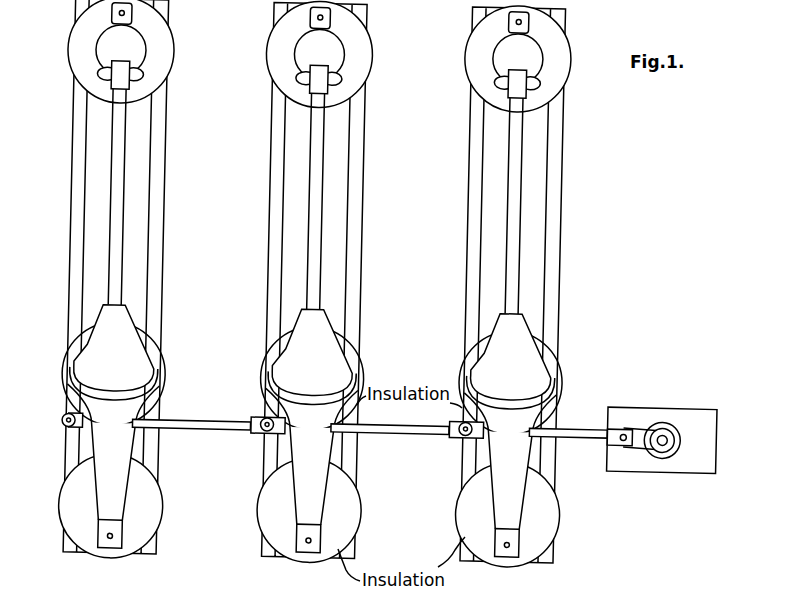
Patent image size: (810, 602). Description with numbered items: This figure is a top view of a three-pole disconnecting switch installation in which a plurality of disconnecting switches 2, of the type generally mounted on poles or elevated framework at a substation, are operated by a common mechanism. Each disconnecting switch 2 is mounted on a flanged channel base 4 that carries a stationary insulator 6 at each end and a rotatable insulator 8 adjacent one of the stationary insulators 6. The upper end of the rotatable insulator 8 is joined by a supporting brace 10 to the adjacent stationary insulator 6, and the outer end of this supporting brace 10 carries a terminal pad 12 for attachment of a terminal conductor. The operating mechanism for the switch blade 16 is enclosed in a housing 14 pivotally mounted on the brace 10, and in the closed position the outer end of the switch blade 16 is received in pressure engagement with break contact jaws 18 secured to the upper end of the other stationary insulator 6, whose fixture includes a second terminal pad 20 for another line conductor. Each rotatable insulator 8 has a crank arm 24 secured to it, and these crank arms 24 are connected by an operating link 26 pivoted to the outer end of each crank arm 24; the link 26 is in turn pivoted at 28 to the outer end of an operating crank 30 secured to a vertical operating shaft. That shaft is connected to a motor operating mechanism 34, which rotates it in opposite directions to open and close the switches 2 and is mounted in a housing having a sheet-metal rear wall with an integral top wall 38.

The disconnecting switch 2 is at (318, 284).
The flanged channel base 4 is at (74, 148).
The stationary insulator 6 is at (75, 36).
The rotatable insulator 8 is at (66, 364).
The supporting brace 10 is at (98, 445).
The terminal pad 12 is at (118, 541).
The housing 14 is at (134, 352).
The switch blade 16 is at (120, 201).
The break contact jaws 18 is at (100, 73).
The second terminal pad 20 is at (127, 14).
The crank arm 24 is at (64, 412).
The operating link 26 is at (210, 426).
The pivot 28 is at (619, 433).
The operating crank 30 is at (645, 430).
The motor operating mechanism 34 is at (706, 462).
The top wall 38 is at (715, 433).